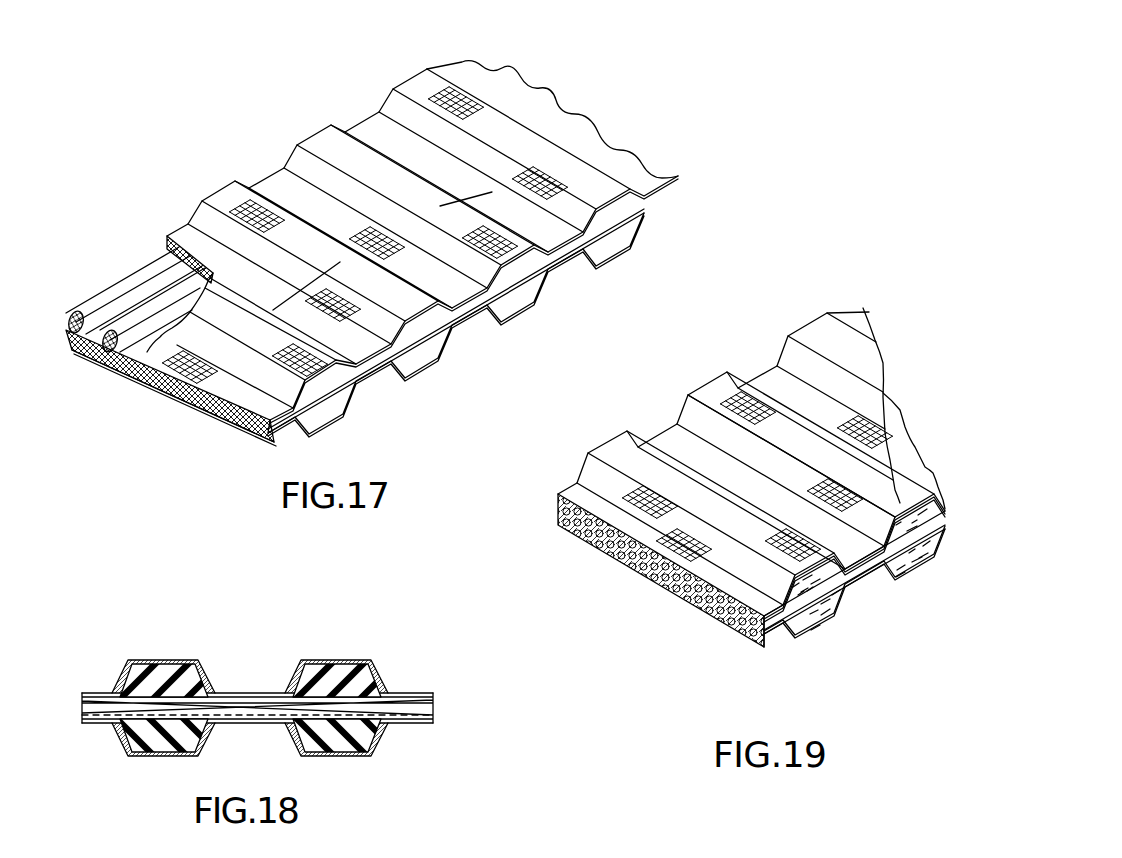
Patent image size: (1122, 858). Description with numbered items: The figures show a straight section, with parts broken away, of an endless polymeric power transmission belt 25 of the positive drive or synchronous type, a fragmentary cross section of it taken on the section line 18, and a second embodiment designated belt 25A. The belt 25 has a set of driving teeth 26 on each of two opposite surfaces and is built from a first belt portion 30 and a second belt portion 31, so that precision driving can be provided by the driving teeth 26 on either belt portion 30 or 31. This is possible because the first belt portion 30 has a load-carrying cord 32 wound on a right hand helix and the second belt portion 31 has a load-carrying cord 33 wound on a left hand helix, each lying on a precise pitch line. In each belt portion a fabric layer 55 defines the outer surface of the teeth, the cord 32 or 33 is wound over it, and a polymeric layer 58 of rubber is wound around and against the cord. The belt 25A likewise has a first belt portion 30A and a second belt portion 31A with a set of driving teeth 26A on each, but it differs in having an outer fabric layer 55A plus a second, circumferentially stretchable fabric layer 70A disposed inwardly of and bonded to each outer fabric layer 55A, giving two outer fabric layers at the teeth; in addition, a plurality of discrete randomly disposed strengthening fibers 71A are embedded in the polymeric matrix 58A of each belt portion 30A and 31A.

In FIG. 17, the endless polymeric power transmission belt 25 is at (411, 263).
In FIG. 17, the driving teeth 26 is at (623, 160).
In FIG. 18, the driving teeth 26 is at (110, 675).
In FIG. 17, the first belt portion 30 is at (556, 97).
In FIG. 18, the first belt portion 30 is at (233, 709).
In FIG. 17, the second belt portion 31 is at (573, 282).
In FIG. 18, the second belt portion 31 is at (379, 758).
In FIG. 17, the load-carrying cord 32 is at (188, 258).
In FIG. 17, the load-carrying cord 33 is at (193, 398).
In FIG. 18, the load-carrying cord 33 is at (347, 693).
In FIG. 17, the section line 18 is at (470, 185).
In FIG. 18, the fabric layer 55 is at (163, 662).
In FIG. 18, the polymeric layer 58 is at (190, 687).
In FIG. 19, the belt 25A is at (720, 484).
In FIG. 19, the driving teeth 26A is at (844, 305).
In FIG. 19, the first belt portion 30A is at (568, 487).
In FIG. 19, the second belt portion 31A is at (736, 629).
In FIG. 19, the outer fabric layer 55A is at (899, 411).
In FIG. 19, the polymeric matrix 58A is at (810, 590).
In FIG. 19, the second fabric layer 70A is at (884, 396).
In FIG. 19, the strengthening fibers 71A is at (812, 586).